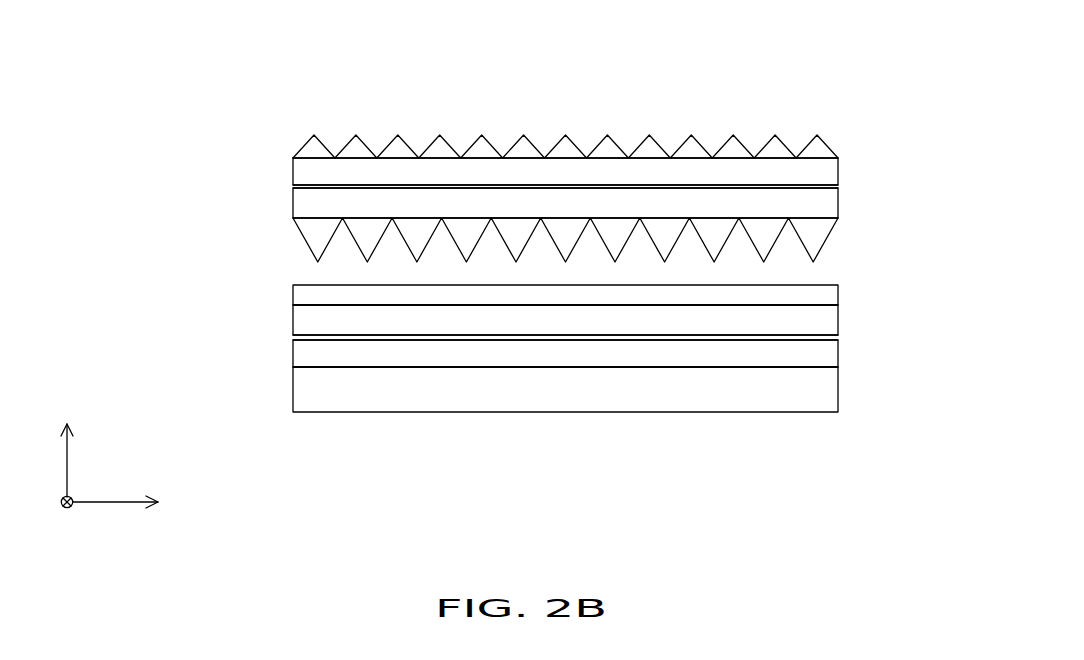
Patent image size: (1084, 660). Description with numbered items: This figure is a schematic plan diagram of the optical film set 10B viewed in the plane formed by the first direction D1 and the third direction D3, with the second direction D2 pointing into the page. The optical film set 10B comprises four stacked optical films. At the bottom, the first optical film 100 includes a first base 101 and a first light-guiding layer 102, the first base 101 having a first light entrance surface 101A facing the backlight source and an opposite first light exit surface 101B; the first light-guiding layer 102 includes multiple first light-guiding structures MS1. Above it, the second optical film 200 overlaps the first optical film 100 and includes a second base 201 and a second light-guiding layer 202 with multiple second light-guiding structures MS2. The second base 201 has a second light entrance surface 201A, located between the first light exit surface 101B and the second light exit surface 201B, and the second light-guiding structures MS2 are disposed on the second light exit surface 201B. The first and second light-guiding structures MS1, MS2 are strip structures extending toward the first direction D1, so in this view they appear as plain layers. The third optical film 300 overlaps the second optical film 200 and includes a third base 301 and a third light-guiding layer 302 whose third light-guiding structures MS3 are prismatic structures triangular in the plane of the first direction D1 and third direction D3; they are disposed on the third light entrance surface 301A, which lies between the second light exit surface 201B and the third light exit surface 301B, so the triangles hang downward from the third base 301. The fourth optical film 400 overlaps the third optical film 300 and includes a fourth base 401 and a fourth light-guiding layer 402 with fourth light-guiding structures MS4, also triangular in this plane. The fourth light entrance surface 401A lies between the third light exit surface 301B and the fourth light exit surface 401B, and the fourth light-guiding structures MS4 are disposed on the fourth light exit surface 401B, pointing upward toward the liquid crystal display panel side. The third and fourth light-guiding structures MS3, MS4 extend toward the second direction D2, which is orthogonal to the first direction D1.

The optical film set 10B is at (106, 97).
The first optical film 100 is at (154, 102).
The first base 101 is at (302, 350).
The first light-guiding layer 102 is at (310, 378).
The second optical film 200 is at (154, 182).
The second base 201 is at (302, 320).
The second light-guiding layer 202 is at (310, 297).
The third optical film 300 is at (154, 267).
The third base 301 is at (302, 201).
The third light-guiding layer 302 is at (312, 228).
The fourth optical film 400 is at (154, 350).
The fourth base 401 is at (302, 172).
The fourth light-guiding layer 402 is at (312, 147).
The first light-guiding structures MS1 is at (815, 395).
The second light-guiding structures MS2 is at (832, 298).
The third light-guiding structures MS3 is at (817, 238).
The fourth light-guiding structures MS4 is at (818, 151).
The first light entrance surface 101A is at (760, 367).
The first light exit surface 101B is at (793, 341).
The second light entrance surface 201A is at (792, 334).
The second light exit surface 201B is at (813, 306).
The third light entrance surface 301A is at (808, 218).
The third light exit surface 301B is at (790, 191).
The fourth light entrance surface 401A is at (794, 184).
The fourth light exit surface 401B is at (812, 159).
The first direction D1 is at (129, 503).
The second direction D2 is at (57, 517).
The third direction D3 is at (67, 445).